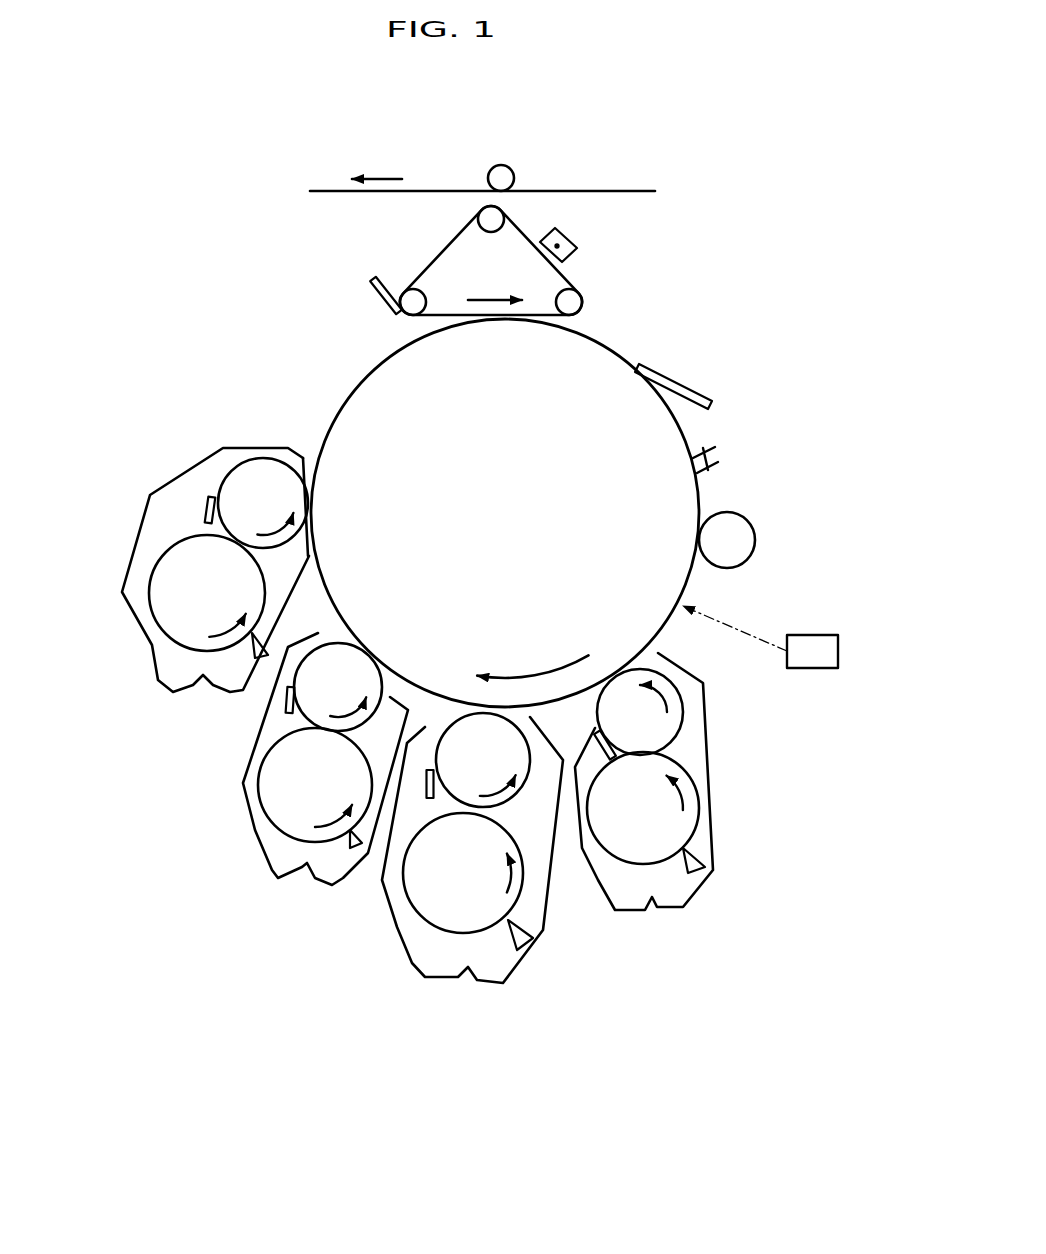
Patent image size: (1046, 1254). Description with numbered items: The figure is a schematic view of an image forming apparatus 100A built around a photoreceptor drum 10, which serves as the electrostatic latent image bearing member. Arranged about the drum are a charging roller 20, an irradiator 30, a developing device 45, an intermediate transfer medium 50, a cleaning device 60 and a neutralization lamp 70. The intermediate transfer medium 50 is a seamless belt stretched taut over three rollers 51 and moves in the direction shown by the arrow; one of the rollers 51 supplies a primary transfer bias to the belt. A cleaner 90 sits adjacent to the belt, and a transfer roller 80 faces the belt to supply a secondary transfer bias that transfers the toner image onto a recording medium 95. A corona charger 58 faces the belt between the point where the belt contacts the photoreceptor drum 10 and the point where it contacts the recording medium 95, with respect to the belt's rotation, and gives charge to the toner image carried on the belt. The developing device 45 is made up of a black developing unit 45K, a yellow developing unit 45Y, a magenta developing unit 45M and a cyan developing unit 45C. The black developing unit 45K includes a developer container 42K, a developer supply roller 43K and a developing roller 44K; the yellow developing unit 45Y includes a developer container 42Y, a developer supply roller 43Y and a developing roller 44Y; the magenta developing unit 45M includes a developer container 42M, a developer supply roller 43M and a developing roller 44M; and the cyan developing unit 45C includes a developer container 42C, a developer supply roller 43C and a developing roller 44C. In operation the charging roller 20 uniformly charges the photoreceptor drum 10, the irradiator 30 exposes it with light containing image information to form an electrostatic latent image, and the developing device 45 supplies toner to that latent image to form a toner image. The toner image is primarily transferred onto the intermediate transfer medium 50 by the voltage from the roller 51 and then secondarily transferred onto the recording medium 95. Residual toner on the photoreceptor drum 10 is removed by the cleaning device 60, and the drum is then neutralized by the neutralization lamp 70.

The image forming apparatus 100A is at (724, 139).
The photoreceptor drum 10 is at (361, 383).
The charging roller 20 is at (756, 540).
The irradiator 30 is at (820, 635).
The developing device 45 is at (694, 1011).
The cyan developing unit 45C is at (119, 534).
The magenta developing unit 45M is at (247, 856).
The yellow developing unit 45Y is at (550, 963).
The black developing unit 45K is at (715, 887).
The developer container 42C is at (178, 694).
The developer container 42M is at (283, 881).
The developer container 42Y is at (443, 981).
The developer container 42K is at (670, 909).
The developer supply roller 43C is at (150, 613).
The developer supply roller 43M is at (257, 797).
The developer supply roller 43Y is at (403, 893).
The developer supply roller 43K is at (698, 803).
The developing roller 44C is at (265, 452).
The developing roller 44M is at (293, 672).
The developing roller 44Y is at (533, 745).
The developing roller 44K is at (680, 712).
The intermediate transfer medium 50 is at (435, 258).
The rollers 51 is at (548, 298).
The corona charger 58 is at (578, 236).
The cleaning device 60 is at (677, 378).
The neutralization lamp 70 is at (716, 459).
The transfer roller 80 is at (502, 165).
The cleaner 90 is at (372, 279).
The recording medium 95 is at (627, 190).